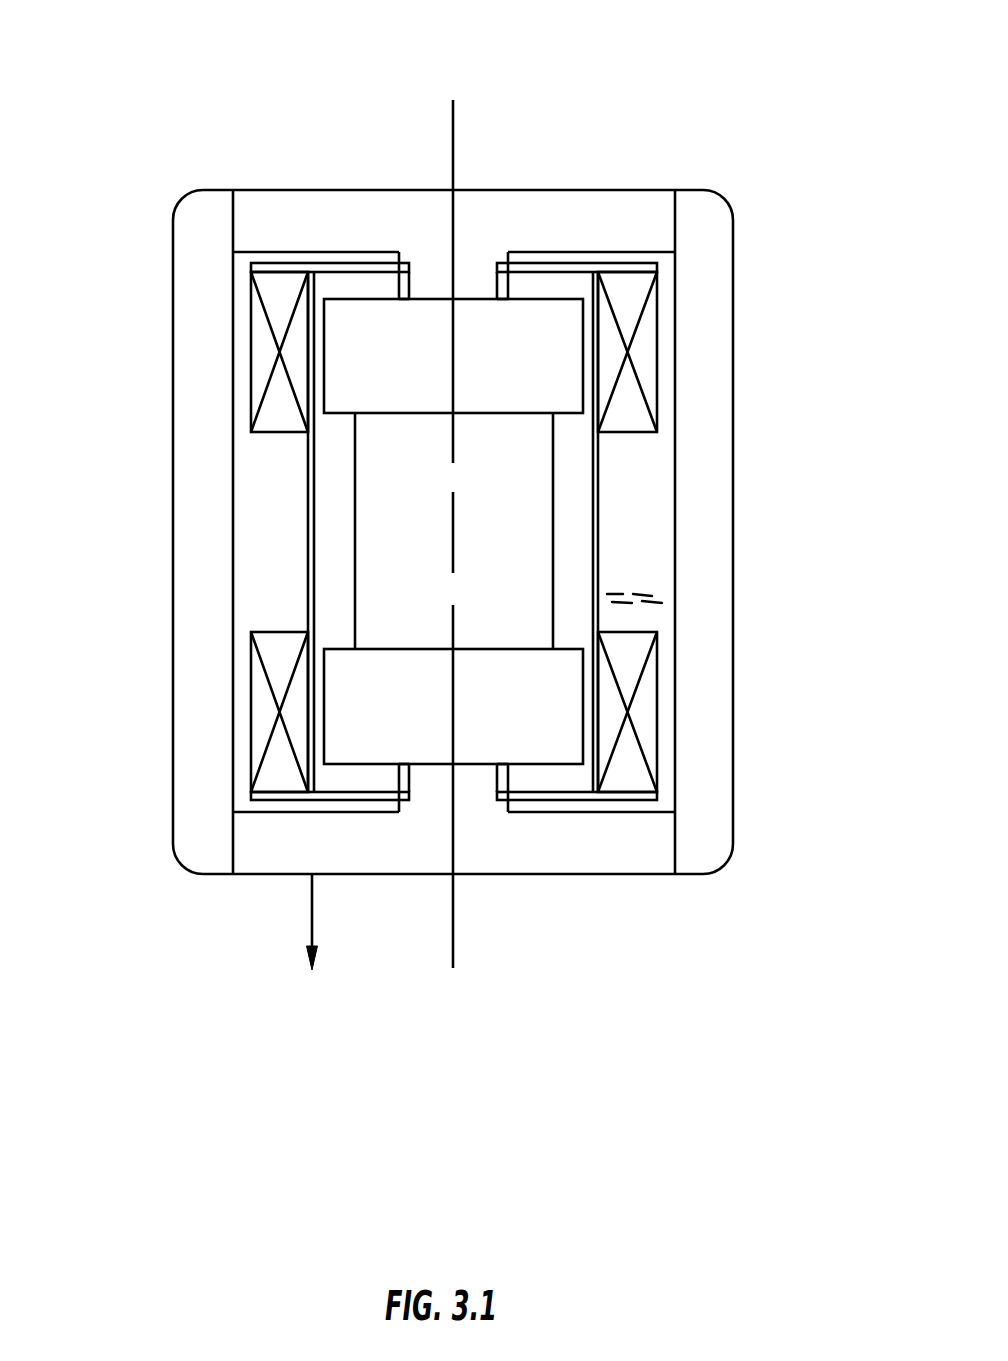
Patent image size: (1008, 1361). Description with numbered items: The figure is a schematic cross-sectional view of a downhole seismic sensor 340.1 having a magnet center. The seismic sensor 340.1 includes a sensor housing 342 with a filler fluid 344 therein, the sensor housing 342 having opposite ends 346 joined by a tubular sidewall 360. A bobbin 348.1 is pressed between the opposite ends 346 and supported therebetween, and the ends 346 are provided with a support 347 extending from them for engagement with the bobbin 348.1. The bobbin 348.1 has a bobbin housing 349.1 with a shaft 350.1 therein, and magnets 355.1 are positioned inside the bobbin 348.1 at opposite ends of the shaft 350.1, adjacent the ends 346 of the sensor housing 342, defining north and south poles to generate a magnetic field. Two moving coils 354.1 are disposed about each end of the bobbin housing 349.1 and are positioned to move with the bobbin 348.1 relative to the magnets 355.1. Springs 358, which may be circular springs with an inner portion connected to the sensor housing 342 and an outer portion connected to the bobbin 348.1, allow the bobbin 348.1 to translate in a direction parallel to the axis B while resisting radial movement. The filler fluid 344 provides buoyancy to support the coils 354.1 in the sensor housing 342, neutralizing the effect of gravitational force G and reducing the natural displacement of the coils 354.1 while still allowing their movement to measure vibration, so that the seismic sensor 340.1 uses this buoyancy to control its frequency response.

The seismic sensor 340.1 is at (539, 63).
The sensor housing 342 is at (215, 189).
The filler fluid 344 is at (653, 600).
The opposite ends 346 is at (592, 212).
The support 347 is at (432, 282).
The bobbin 348.1 is at (599, 489).
The bobbin housing 349.1 is at (308, 562).
The shaft 350.1 is at (508, 593).
The moving coils 354.1 is at (657, 390).
The magnets 355.1 is at (425, 680).
The springs 358 is at (598, 265).
The tubular sidewall 360 is at (193, 617).